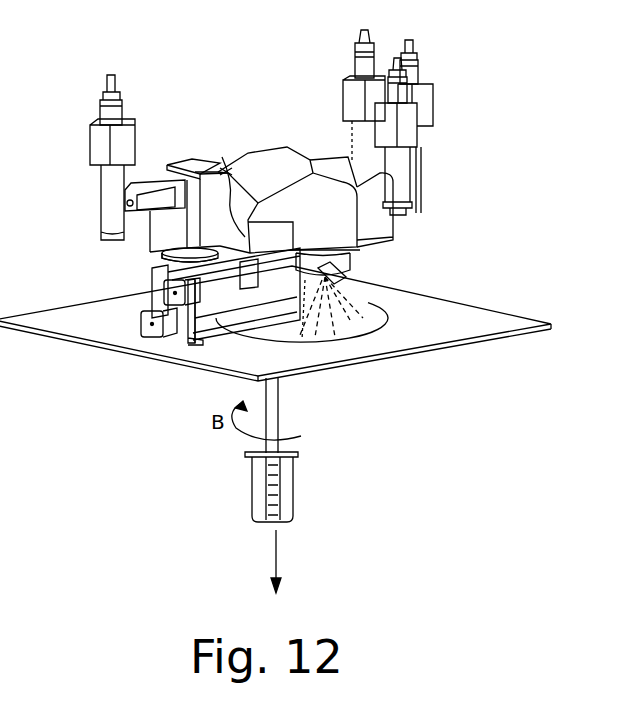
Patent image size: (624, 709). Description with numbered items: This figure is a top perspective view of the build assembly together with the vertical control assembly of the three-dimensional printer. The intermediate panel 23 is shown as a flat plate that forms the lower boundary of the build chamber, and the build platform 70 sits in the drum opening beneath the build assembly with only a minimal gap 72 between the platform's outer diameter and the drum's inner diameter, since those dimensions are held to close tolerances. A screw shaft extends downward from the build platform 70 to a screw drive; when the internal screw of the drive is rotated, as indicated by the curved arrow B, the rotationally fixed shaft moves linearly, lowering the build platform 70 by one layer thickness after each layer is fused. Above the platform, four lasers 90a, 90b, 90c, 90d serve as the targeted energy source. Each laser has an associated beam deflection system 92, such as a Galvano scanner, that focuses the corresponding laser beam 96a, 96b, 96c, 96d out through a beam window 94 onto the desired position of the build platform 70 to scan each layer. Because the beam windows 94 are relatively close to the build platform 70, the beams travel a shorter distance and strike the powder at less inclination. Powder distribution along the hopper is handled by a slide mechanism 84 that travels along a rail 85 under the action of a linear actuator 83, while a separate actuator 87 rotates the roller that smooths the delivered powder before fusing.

The intermediate panel 23 is at (520, 333).
The build platform 70 is at (352, 332).
The gap 72 is at (390, 315).
The linear actuator 83 is at (185, 335).
The slide mechanism 84 is at (228, 280).
The rail 85 is at (247, 280).
The actuator 87 is at (142, 338).
The laser 90a is at (429, 110).
The laser 90b is at (416, 68).
The laser 90c is at (345, 90).
The laser 90d is at (100, 117).
The beam deflection system 92 is at (187, 165).
The beam window 94 is at (335, 265).
The laser beam 96a is at (318, 333).
The laser beam 96b is at (356, 292).
The laser beam 96c is at (226, 185).
The laser beam 96d is at (152, 268).